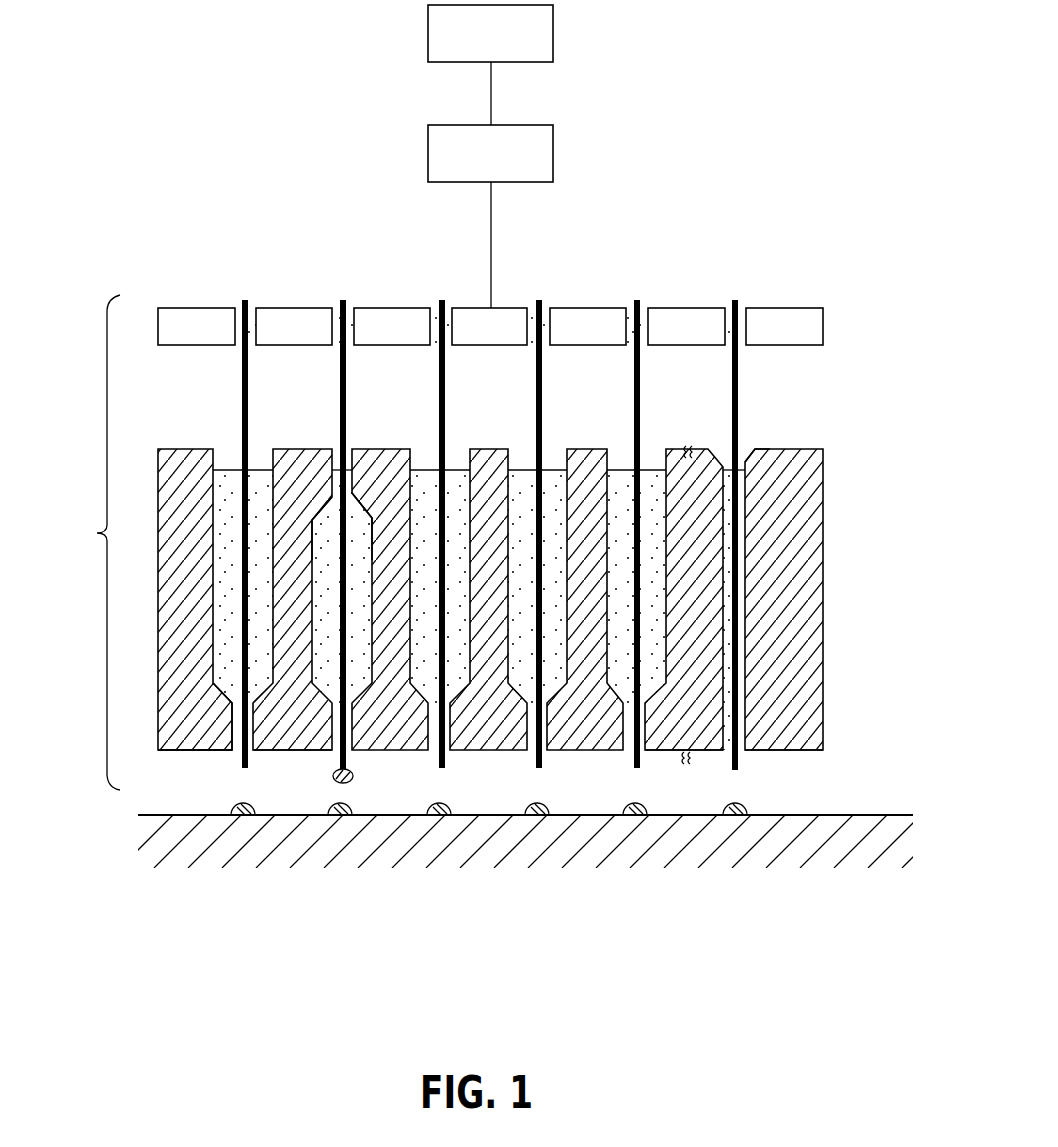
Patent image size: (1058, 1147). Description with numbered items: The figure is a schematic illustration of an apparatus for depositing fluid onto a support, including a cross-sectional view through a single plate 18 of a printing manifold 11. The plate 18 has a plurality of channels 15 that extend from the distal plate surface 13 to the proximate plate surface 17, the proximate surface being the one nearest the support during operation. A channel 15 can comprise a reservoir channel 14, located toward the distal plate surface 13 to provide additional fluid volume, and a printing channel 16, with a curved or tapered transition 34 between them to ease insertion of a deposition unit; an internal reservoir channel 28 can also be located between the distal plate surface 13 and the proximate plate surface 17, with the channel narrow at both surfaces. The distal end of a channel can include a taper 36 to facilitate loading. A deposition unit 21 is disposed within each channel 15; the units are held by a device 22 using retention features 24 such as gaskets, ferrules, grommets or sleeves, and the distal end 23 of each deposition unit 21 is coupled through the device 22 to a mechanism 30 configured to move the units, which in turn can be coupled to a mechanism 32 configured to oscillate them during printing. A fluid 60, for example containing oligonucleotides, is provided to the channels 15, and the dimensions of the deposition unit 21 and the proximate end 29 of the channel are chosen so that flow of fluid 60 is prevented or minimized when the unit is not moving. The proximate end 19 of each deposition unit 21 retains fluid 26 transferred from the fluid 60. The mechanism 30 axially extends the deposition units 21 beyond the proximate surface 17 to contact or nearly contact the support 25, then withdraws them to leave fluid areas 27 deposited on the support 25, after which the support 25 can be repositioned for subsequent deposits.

The printing manifold 11 is at (89, 542).
The distal plate surface 13 is at (165, 449).
The reservoir channel 14 is at (205, 660).
The channel 15 is at (745, 575).
The printing channel 16 is at (215, 742).
The proximate plate surface 17 is at (785, 752).
The plate 18 is at (823, 494).
The proximate end of deposition unit 19 is at (739, 770).
The deposition unit 21 is at (741, 400).
The device 22 is at (197, 307).
The distal end of deposition unit 23 is at (740, 303).
The retention feature 24 is at (338, 305).
The support 25 is at (890, 815).
The fluid 26 is at (345, 784).
The fluid area 27 is at (735, 818).
The internal reservoir channel 28 is at (358, 500).
The proximate end of channel 29 is at (718, 752).
The mechanism configured to move 30 is at (553, 164).
The mechanism configured to oscillate 32 is at (553, 36).
The transition 34 is at (318, 752).
The taper 36 is at (753, 454).
The fluid 60 is at (652, 470).